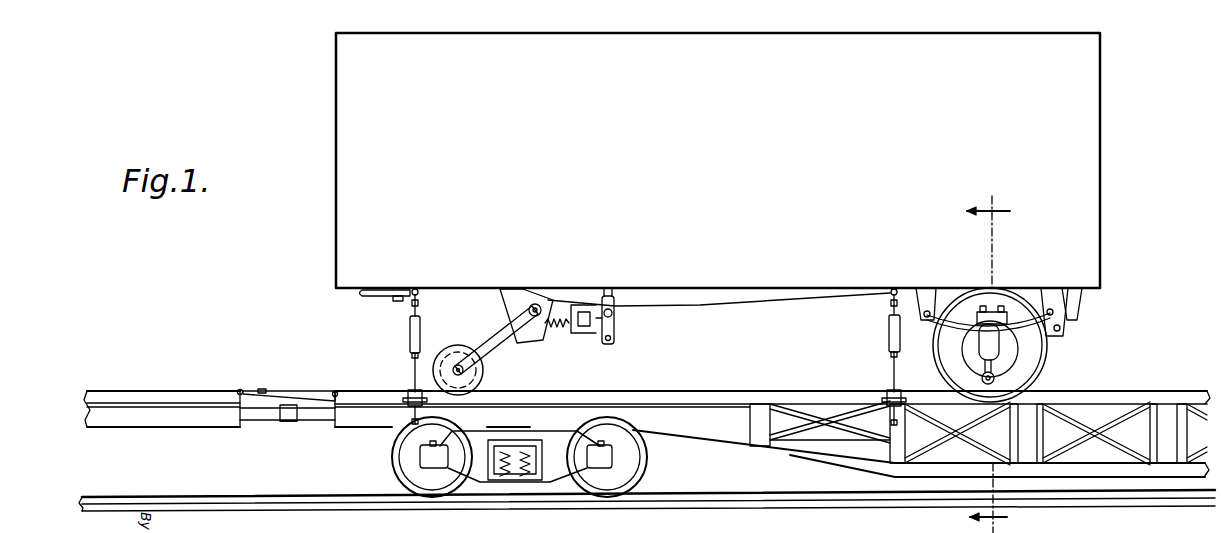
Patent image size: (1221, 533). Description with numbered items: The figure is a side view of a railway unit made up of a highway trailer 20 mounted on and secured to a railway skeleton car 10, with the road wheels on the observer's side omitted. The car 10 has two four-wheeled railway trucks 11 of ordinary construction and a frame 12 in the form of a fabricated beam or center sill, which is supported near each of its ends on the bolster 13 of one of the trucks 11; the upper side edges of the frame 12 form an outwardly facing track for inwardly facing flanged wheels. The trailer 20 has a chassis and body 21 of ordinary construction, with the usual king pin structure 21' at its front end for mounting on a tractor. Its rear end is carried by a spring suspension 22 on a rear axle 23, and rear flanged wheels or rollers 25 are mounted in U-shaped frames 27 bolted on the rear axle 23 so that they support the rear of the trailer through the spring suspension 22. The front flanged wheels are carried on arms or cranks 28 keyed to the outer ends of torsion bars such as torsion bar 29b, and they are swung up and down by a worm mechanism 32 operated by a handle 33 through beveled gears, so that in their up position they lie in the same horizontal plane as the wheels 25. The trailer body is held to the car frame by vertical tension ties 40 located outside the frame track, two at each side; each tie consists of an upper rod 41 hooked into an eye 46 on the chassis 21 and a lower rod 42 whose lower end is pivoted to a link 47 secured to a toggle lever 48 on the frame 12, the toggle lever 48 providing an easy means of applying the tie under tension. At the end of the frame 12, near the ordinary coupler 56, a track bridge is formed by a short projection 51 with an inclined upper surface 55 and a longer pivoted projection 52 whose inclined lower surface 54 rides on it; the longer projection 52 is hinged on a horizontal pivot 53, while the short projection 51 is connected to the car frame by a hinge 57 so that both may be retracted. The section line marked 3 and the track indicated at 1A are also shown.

The track rail 1A is at (253, 496).
The section line 3- 3 is at (989, 354).
The railway skeleton car 10 is at (146, 390).
The railway truck 11 is at (470, 483).
The frame 12 is at (950, 444).
The bolster 13 is at (526, 446).
The trailer 20 is at (792, 152).
The chassis and body 21 is at (719, 313).
The king pin structure 21' is at (375, 312).
The spring suspension 22 is at (945, 313).
The rear axle 23 is at (1000, 348).
The flanged wheels 25 is at (485, 365).
The U-shaped frames 27 is at (1015, 312).
The arms or cranks 28 is at (505, 340).
The torsion bar 29b is at (540, 307).
The worm mechanism 32 is at (576, 328).
The handle 33 is at (615, 323).
The tension ties 40 is at (424, 348).
The rod 41 is at (418, 308).
The rod 42 is at (413, 374).
The eye 46 is at (418, 290).
The link 47 is at (406, 398).
The toggle lever 48 is at (410, 420).
The short projections 51 is at (257, 410).
The longer pivoted projections 52 is at (306, 390).
The horizontal pivot 53 is at (336, 392).
The inclined lower surface 54 is at (292, 418).
The inclined upper surface 55 is at (260, 389).
The coupler 56 is at (282, 421).
The hinge 57 is at (239, 390).